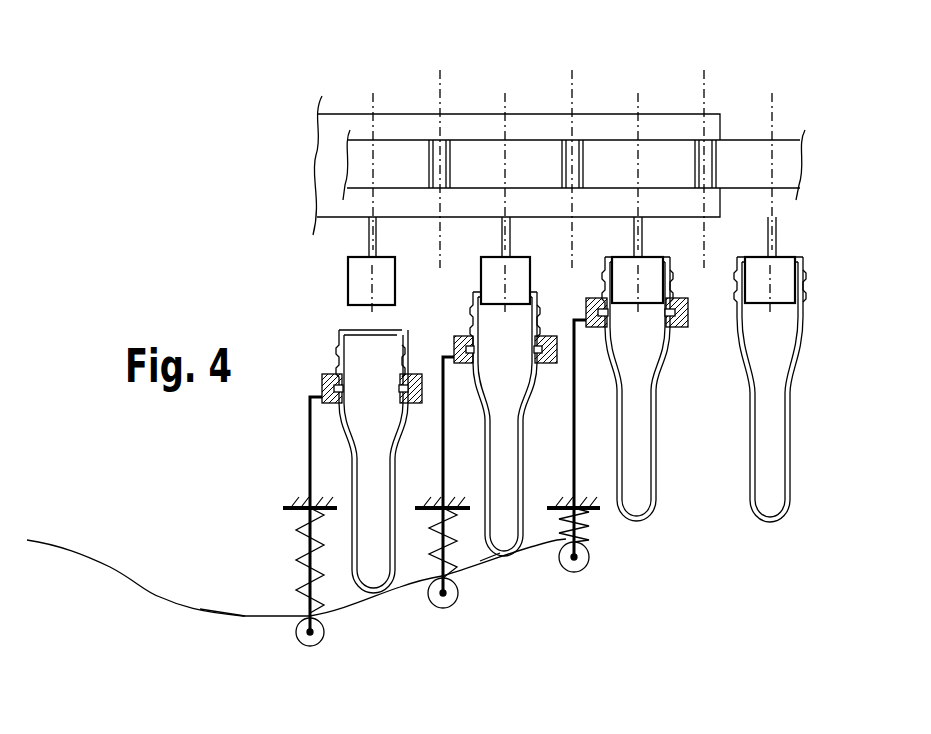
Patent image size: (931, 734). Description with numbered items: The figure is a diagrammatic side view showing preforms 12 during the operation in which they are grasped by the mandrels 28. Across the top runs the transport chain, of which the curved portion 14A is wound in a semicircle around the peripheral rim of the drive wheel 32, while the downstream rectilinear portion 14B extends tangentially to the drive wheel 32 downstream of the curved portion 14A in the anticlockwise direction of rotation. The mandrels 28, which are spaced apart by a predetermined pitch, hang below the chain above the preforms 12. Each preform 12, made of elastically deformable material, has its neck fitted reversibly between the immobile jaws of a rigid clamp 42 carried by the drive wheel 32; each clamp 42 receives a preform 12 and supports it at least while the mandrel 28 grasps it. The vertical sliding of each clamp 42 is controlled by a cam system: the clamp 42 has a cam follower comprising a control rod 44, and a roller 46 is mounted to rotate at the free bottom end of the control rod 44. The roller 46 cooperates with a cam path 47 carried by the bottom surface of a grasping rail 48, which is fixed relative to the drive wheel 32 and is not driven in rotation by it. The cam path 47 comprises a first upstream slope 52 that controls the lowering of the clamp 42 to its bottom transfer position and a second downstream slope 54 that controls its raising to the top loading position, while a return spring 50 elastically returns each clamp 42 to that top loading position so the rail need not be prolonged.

The preform 12 is at (374, 572).
The curved portion of the transport chain 14A is at (470, 162).
The downstream rectilinear portion 14B is at (784, 160).
The mandrel 28 is at (778, 282).
The drive wheel 32 is at (549, 124).
The clamp 42 is at (323, 378).
The control rod 44 is at (308, 434).
The roller 46 is at (297, 640).
The cam path 47 is at (205, 609).
The grasping rail 48 is at (138, 591).
The return spring 50 is at (296, 560).
The first upstream slope 52 is at (112, 565).
The second downstream slope 54 is at (490, 561).